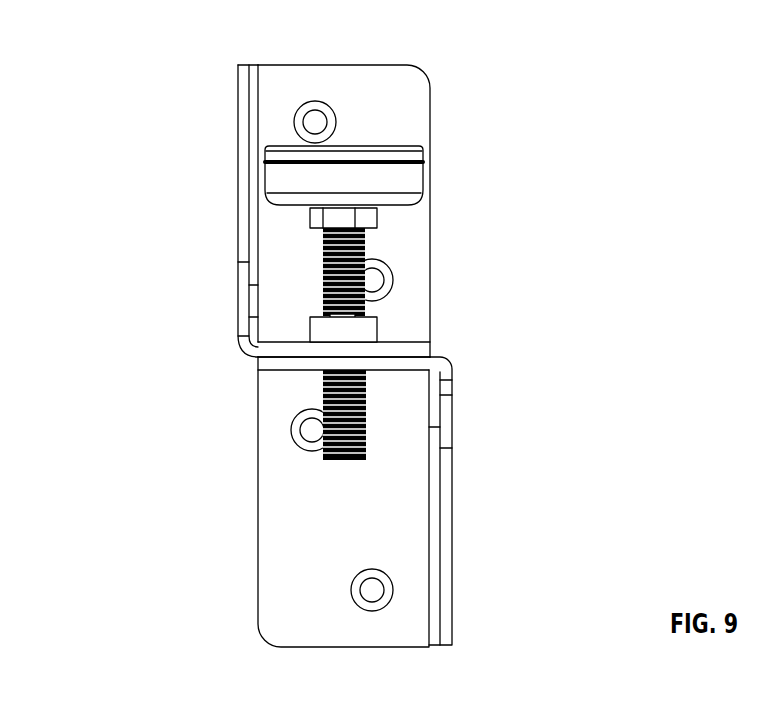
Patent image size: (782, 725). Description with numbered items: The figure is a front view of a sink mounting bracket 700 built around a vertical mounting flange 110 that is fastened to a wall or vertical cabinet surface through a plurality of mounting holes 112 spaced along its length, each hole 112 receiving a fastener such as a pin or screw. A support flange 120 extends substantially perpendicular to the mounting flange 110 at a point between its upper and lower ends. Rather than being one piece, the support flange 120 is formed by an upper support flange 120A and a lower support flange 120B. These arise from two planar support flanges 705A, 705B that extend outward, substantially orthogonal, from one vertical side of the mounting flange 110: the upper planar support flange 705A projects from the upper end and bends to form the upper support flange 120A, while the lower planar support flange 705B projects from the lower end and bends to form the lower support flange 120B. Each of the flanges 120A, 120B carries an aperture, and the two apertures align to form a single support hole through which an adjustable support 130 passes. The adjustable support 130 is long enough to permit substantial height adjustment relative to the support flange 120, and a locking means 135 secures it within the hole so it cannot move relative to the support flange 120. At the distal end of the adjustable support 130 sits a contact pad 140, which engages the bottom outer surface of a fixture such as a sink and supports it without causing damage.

The mounting bracket 700 is at (80, 42).
The mounting flange 110 is at (280, 521).
The mounting hole 112 is at (335, 85).
The support flange 120 is at (484, 354).
The upper support flange 120A is at (385, 348).
The lower support flange 120B is at (310, 365).
The adjustable support 130 is at (365, 250).
The locking means 135 is at (365, 327).
The contact pad 140 is at (400, 177).
The upper planar support flange 705A is at (242, 152).
The lower planar support flange 705B is at (445, 505).